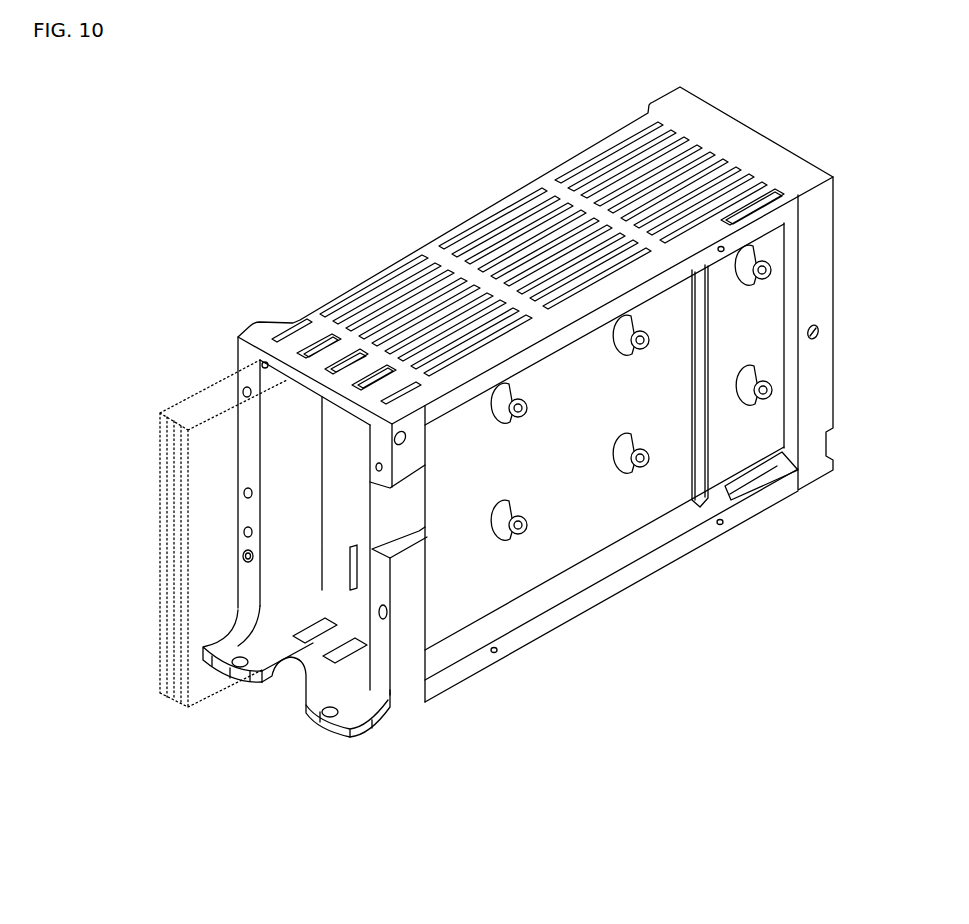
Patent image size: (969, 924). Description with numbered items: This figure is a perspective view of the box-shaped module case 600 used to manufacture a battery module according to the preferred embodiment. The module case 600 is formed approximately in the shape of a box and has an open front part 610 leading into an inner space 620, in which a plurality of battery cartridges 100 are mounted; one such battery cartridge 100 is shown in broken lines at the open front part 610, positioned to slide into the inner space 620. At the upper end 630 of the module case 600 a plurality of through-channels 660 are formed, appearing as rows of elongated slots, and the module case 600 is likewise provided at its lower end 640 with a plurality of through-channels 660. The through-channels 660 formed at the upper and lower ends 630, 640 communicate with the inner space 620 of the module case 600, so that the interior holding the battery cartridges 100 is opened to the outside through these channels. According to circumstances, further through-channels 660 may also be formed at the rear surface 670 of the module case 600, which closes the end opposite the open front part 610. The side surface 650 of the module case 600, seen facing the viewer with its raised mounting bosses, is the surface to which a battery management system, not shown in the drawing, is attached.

The battery cartridge 100 is at (160, 546).
The module case 600 is at (84, 150).
The open front part 610 is at (278, 408).
The inner space 620 is at (335, 640).
The upper end 630 is at (437, 257).
The lower end 640 is at (553, 633).
The side surface 650 is at (627, 507).
The through-channel 660 is at (537, 208).
The rear surface 670 is at (767, 135).